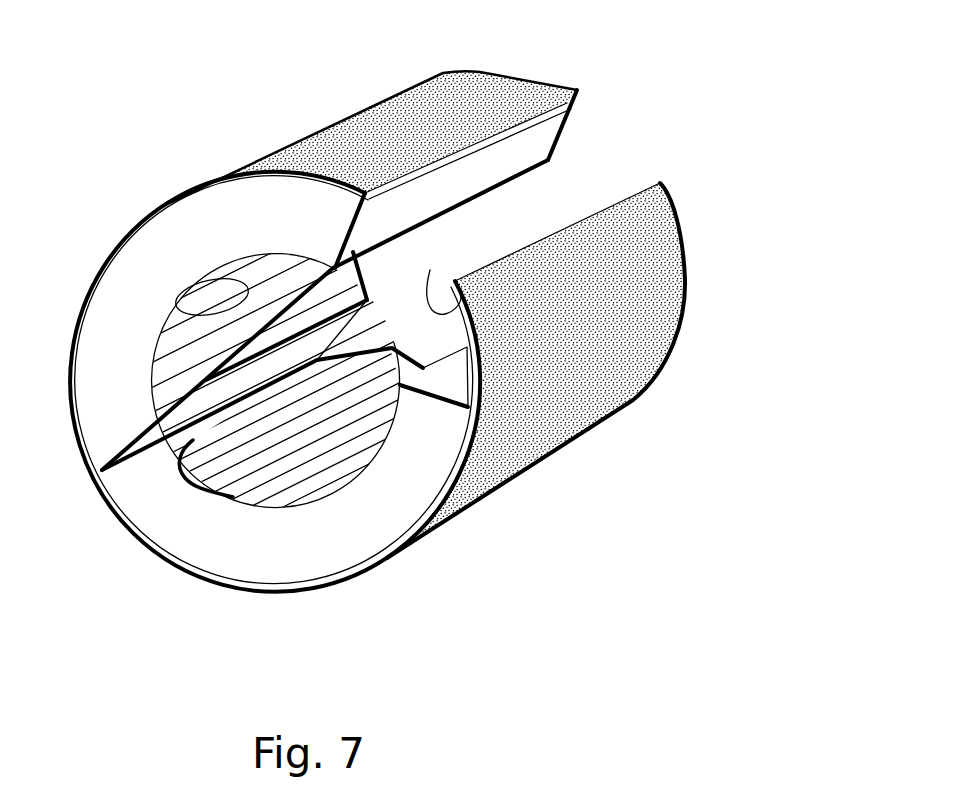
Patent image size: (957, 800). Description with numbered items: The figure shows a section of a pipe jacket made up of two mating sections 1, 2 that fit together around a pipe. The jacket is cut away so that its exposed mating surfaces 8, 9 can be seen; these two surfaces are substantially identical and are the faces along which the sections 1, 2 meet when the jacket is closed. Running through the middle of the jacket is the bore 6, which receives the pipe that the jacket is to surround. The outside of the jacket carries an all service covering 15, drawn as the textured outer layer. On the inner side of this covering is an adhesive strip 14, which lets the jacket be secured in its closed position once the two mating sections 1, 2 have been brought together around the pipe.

The mating section 1 is at (115, 350).
The mating section 2 is at (253, 542).
The bore 6 is at (177, 313).
The mating surface 8 is at (147, 433).
The mating surface 9 is at (170, 458).
The adhesive strip 14 is at (434, 272).
The all service covering 15 is at (582, 290).